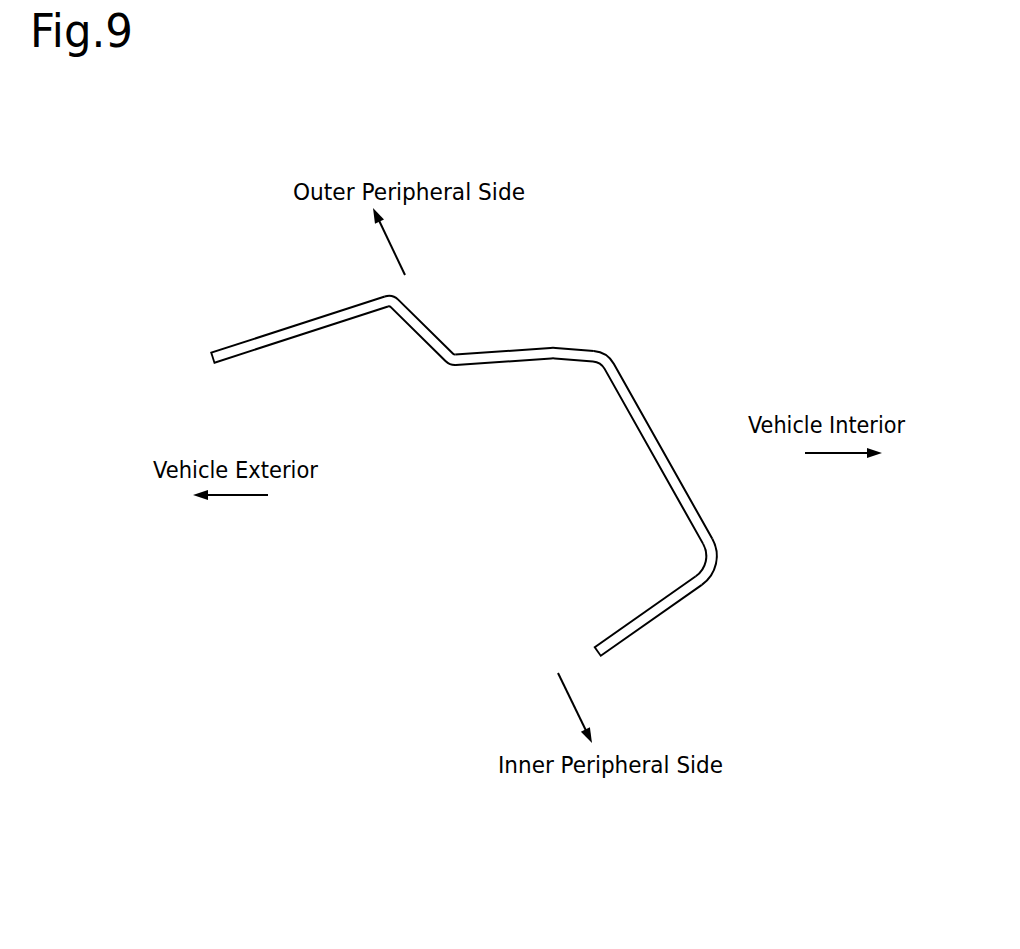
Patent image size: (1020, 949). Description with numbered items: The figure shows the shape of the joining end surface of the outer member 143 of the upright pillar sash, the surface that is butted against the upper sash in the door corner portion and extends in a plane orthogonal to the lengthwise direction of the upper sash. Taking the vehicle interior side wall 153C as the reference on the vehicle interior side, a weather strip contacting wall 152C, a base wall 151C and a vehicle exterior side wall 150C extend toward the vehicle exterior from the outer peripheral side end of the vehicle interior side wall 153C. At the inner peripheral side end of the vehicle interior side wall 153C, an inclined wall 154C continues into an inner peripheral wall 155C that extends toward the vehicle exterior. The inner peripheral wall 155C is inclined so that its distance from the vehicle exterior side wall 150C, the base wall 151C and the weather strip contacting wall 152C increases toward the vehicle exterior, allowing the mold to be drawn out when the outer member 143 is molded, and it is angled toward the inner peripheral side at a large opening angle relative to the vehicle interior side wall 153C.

The outer member 143 is at (598, 342).
The vehicle exterior side wall 150C is at (287, 332).
The base wall 151C is at (423, 337).
The weather strip contacting wall 152C is at (517, 357).
The vehicle interior side wall 153C is at (682, 483).
The inclined wall 154C is at (703, 560).
The inner peripheral wall 155C is at (655, 613).